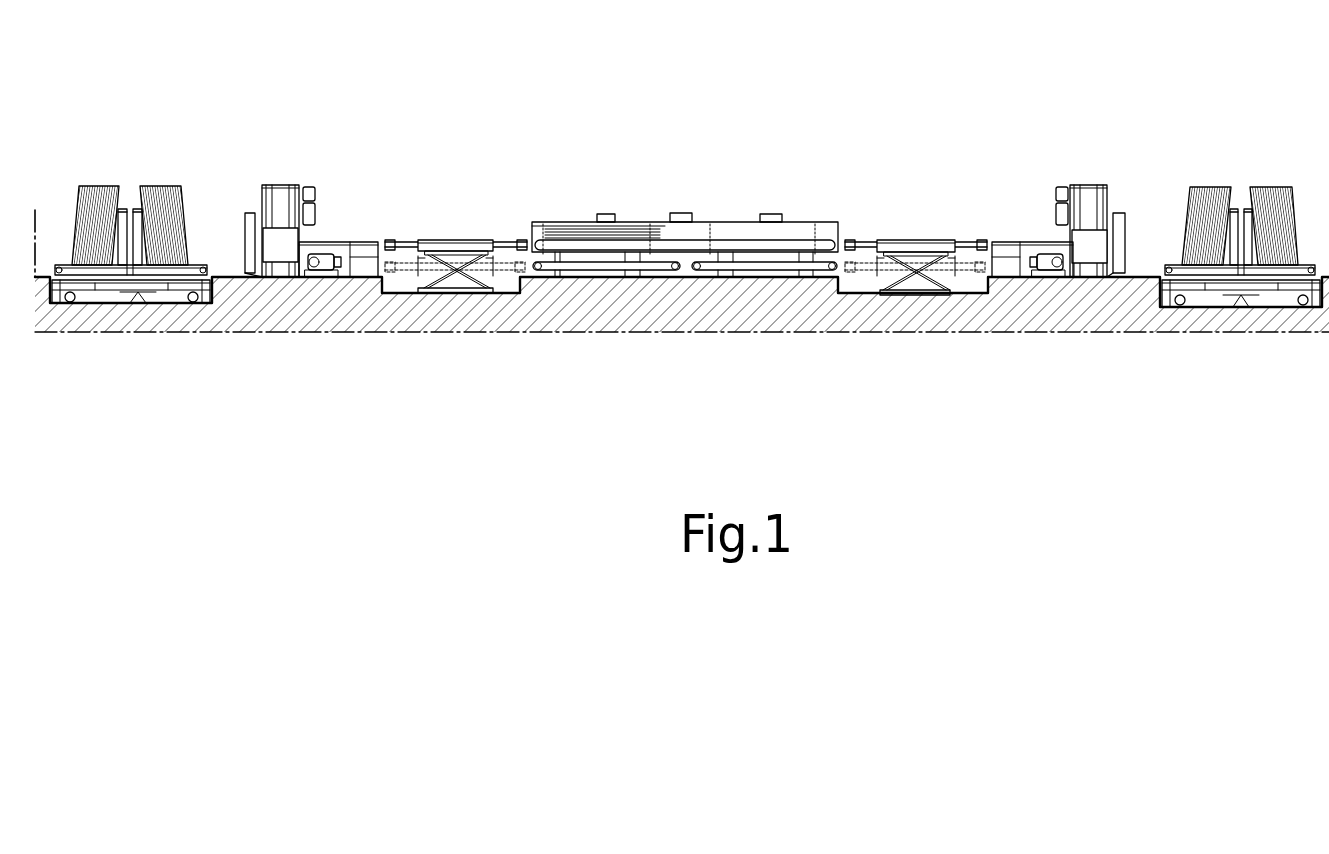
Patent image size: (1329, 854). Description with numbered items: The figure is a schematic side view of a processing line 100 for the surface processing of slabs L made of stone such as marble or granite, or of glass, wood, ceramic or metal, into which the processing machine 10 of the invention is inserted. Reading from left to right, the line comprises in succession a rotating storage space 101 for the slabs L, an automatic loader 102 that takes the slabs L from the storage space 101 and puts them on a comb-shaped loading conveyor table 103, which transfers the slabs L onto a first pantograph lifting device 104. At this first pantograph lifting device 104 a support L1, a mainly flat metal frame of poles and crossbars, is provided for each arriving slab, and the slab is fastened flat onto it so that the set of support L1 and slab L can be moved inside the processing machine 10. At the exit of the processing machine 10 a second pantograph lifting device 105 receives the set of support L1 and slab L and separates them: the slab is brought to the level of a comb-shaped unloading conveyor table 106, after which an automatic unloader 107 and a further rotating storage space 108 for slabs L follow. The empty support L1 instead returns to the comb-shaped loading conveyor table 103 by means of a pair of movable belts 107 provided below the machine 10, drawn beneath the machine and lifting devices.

The processing line 100 is at (968, 197).
The rotating storage space 101 is at (131, 176).
The slab L is at (118, 185).
The support L1 is at (417, 240).
The automatic loader 102 is at (282, 182).
The comb-shaped loading conveyor table 103 is at (343, 233).
The first pantograph lifting device 104 is at (456, 194).
The processing machine 10 is at (828, 256).
The automatic unloader 107 is at (1083, 182).
The second pantograph lifting device 105 is at (902, 236).
The comb-shaped unloading conveyor table 106 is at (1017, 237).
The further rotating storage space 108 is at (1229, 183).